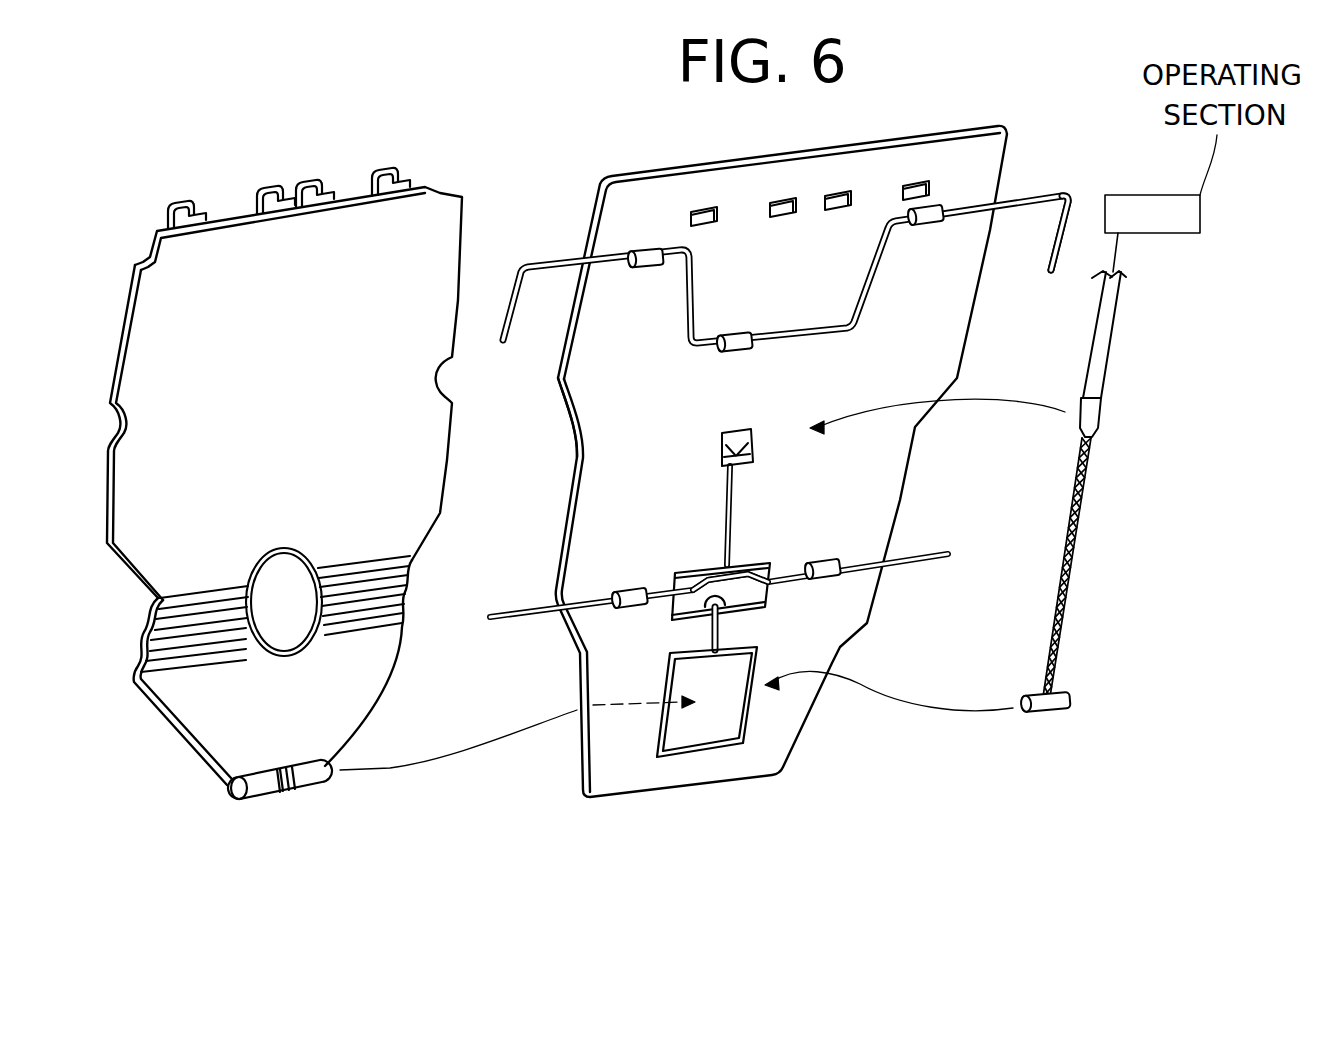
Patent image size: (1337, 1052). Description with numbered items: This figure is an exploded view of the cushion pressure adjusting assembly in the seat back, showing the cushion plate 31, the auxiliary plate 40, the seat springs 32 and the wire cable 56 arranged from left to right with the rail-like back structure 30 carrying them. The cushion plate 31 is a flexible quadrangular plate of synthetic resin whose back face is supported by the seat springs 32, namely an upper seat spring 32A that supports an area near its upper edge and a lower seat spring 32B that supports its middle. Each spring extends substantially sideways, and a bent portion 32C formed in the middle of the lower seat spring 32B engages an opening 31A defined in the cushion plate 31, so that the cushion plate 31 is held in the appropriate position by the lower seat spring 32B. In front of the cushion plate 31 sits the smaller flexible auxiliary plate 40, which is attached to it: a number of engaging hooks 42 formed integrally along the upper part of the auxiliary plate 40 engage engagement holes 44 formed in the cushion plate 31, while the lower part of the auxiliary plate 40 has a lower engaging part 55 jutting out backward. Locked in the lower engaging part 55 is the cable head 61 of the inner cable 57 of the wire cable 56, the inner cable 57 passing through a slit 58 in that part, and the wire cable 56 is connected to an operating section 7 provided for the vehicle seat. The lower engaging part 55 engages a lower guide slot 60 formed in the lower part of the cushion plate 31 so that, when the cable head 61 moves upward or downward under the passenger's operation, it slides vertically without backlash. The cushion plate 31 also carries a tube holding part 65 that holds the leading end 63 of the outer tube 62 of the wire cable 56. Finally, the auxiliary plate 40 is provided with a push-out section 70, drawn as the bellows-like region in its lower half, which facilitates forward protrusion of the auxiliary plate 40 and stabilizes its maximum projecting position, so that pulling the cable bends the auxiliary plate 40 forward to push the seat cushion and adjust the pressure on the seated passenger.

The operating section 7 is at (1175, 237).
The rail 30 is at (572, 458).
The cushion plate 31 is at (563, 411).
The opening 31A is at (680, 572).
The seat springs 32 is at (553, 262).
The upper seat spring 32A is at (1040, 200).
The lower seat spring 32B is at (915, 556).
The bent portion 32C is at (728, 576).
The auxiliary plate 40 is at (443, 210).
The engaging hooks 42 is at (185, 205).
The engagement holes 44 is at (708, 224).
The lower engaging part 55 is at (302, 774).
The wire cable 56 is at (1080, 530).
The inner cable 57 is at (1066, 612).
The slit 58 is at (300, 792).
The lower guide slot 60 is at (740, 664).
The cable head 61 is at (1063, 712).
The outer tube 62 is at (1105, 330).
The leading end 63 is at (1100, 410).
The tube holding part 65 is at (750, 455).
The push-out section 70 is at (187, 592).